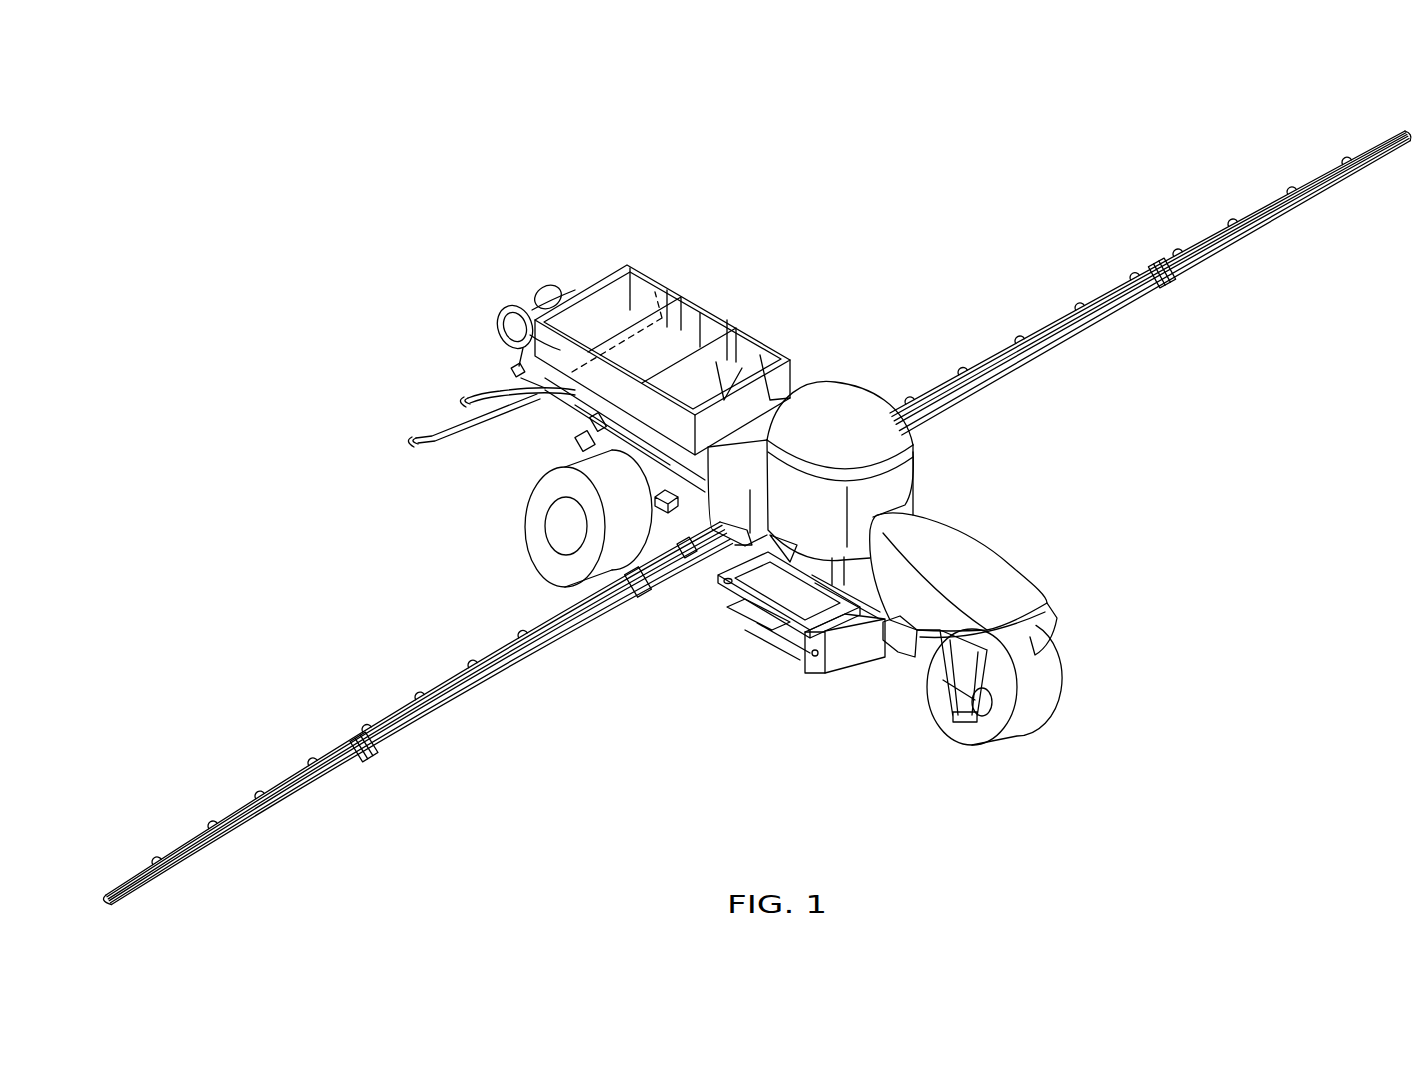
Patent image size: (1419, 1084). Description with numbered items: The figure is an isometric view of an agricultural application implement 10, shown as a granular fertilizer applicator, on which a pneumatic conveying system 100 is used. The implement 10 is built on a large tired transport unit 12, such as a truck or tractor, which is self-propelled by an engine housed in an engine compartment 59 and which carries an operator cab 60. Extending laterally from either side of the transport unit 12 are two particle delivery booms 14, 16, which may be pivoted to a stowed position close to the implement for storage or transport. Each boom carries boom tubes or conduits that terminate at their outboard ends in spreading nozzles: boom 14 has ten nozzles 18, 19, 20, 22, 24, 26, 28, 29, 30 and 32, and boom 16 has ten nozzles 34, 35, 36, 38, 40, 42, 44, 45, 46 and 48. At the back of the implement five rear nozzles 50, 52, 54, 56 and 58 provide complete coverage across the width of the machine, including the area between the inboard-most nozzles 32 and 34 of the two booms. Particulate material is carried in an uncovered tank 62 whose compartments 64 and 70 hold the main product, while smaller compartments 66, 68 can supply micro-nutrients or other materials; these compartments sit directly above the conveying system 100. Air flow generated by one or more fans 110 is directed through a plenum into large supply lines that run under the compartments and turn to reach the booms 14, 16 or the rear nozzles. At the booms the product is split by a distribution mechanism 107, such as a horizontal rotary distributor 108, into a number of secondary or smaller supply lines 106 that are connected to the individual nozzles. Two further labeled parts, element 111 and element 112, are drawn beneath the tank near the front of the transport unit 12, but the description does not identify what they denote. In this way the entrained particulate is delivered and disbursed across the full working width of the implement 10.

The agricultural application implement 10 is at (806, 700).
The transport unit 12 is at (738, 647).
The particle delivery boom 14 is at (988, 347).
The particle delivery boom 16 is at (497, 700).
The nozzle 18 is at (1404, 128).
The nozzle 19 is at (1345, 158).
The nozzle 20 is at (1290, 187).
The nozzle 22 is at (1231, 219).
The nozzle 24 is at (1176, 249).
The nozzle 26 is at (1133, 272).
The nozzle 28 is at (1078, 303).
The nozzle 29 is at (1018, 335).
The nozzle 30 is at (961, 367).
The nozzle 32 is at (908, 396).
The nozzle 34 is at (548, 588).
The nozzle 35 is at (521, 628).
The nozzle 36 is at (471, 658).
The nozzle 38 is at (418, 690).
The nozzle 40 is at (365, 723).
The nozzle 42 is at (311, 756).
The nozzle 44 is at (258, 790).
The nozzle 45 is at (211, 820).
The nozzle 46 is at (155, 856).
The nozzle 48 is at (103, 886).
The rear nozzle 50 is at (626, 262).
The rear nozzle 52 is at (622, 298).
The rear nozzle 54 is at (514, 366).
The rear nozzle 56 is at (462, 397).
The rear nozzle 58 is at (411, 437).
The engine compartment 59 is at (980, 552).
The operator cab 60 is at (903, 474).
The tank 62 is at (740, 320).
The compartment 64 is at (650, 290).
The compartment 66 is at (683, 310).
The compartment 68 is at (722, 332).
The compartment 70 is at (767, 350).
The pneumatic conveying system 100 is at (716, 263).
The secondary supply line 106 is at (1257, 225).
The distribution mechanism 107 is at (1157, 297).
The horizontal rotary distributor 108 is at (1162, 286).
The fan 110 is at (512, 312).
The bracket 111 is at (590, 420).
The meter 112 is at (577, 438).